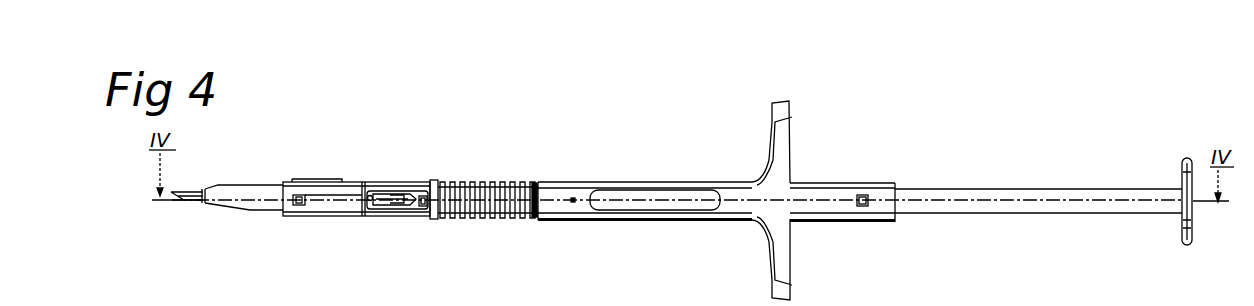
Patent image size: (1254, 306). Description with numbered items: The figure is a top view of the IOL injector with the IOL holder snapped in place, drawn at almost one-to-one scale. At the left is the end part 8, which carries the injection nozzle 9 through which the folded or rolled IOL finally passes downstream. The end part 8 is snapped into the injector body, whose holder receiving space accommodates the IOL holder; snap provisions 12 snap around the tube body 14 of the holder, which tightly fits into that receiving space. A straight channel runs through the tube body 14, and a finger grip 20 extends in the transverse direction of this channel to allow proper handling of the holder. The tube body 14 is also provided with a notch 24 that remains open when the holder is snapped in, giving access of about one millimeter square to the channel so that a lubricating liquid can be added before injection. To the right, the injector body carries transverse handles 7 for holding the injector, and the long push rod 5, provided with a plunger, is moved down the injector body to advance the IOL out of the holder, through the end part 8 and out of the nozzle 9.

The push rod 5 is at (1033, 197).
The handles 7 is at (770, 270).
The end part 8 is at (252, 203).
The injection nozzle 9 is at (192, 200).
The snap provisions 12 is at (395, 183).
The tube body 14 is at (370, 195).
The finger grip 20 is at (408, 205).
The notch 24 is at (435, 207).